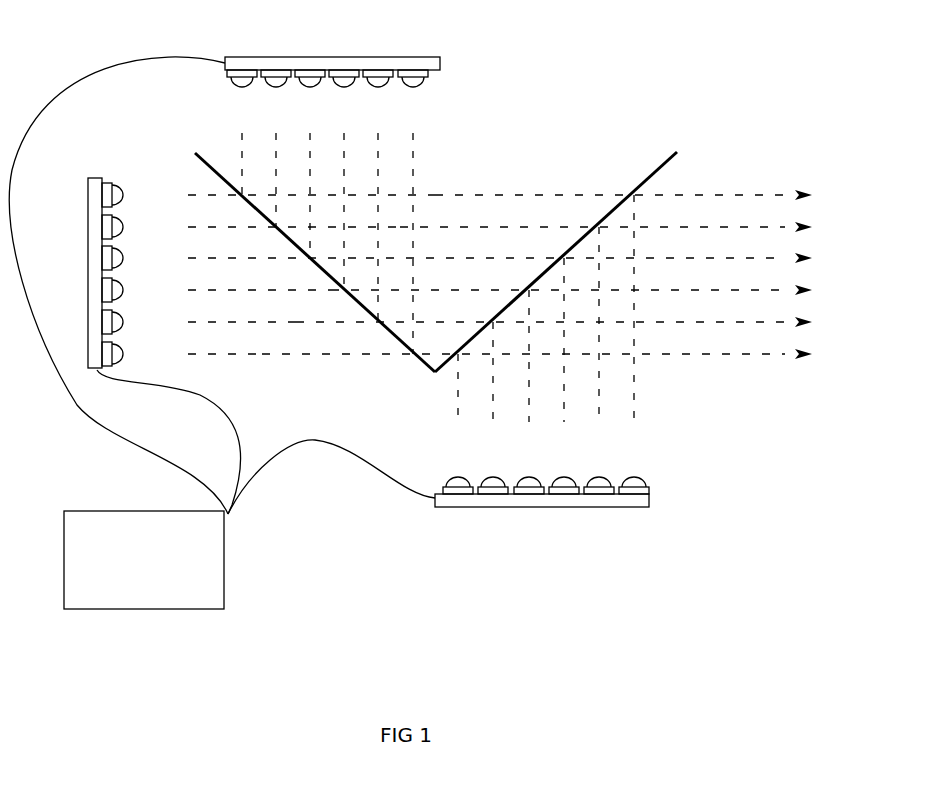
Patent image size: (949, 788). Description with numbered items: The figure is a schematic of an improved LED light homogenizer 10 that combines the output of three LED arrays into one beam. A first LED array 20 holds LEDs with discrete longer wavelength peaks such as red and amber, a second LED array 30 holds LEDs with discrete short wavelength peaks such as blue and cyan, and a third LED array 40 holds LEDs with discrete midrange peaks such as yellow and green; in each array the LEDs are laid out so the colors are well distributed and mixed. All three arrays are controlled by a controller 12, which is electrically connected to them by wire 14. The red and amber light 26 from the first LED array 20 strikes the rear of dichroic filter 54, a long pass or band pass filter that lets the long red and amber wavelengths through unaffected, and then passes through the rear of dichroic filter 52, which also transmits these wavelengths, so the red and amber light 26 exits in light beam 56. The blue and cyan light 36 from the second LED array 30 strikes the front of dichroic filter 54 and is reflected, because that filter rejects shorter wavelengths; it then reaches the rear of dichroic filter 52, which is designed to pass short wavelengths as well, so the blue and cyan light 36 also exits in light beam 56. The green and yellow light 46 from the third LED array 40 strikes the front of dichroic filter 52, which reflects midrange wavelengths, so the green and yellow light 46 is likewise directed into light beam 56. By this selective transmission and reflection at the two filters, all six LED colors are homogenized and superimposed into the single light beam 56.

The LED light homogenizer 10 is at (547, 80).
The controller 12 is at (216, 588).
The wire 14 is at (287, 445).
The first LED array 20 is at (97, 178).
The red and amber light 26 is at (311, 274).
The second LED array 30 is at (308, 62).
The blue and cyan light 36 is at (327, 243).
The third LED array 40 is at (650, 497).
The green and yellow light 46 is at (546, 308).
The dichroic filter 52 is at (663, 158).
The dichroic filter 54 is at (195, 153).
The light beam 56 is at (551, 274).